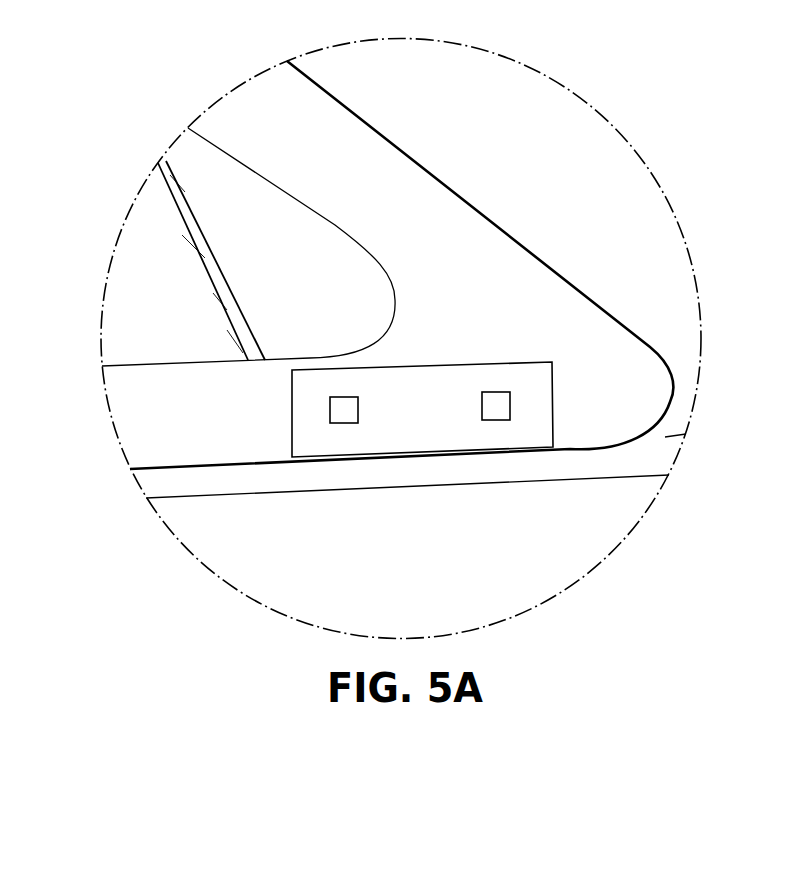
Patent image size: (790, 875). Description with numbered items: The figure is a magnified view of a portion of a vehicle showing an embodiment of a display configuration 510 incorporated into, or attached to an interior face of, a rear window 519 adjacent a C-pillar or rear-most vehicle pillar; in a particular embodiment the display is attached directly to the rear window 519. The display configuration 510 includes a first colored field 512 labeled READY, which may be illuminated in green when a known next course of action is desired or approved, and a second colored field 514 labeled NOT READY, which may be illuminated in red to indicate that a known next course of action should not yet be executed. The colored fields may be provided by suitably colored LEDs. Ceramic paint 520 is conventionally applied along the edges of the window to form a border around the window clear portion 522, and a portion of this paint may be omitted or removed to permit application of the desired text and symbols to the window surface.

The display configuration 510 is at (438, 365).
The first colored field 512 is at (510, 405).
The second colored field 514 is at (330, 410).
The rear window 519 is at (147, 261).
The ceramic paint 520 is at (593, 338).
The window clear portion 522 is at (183, 328).